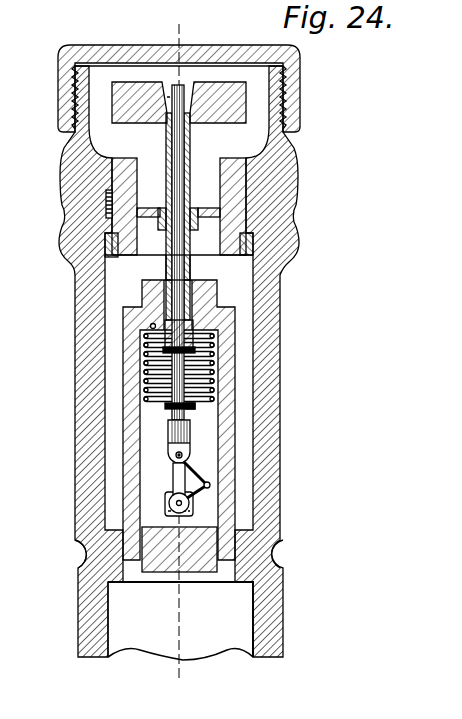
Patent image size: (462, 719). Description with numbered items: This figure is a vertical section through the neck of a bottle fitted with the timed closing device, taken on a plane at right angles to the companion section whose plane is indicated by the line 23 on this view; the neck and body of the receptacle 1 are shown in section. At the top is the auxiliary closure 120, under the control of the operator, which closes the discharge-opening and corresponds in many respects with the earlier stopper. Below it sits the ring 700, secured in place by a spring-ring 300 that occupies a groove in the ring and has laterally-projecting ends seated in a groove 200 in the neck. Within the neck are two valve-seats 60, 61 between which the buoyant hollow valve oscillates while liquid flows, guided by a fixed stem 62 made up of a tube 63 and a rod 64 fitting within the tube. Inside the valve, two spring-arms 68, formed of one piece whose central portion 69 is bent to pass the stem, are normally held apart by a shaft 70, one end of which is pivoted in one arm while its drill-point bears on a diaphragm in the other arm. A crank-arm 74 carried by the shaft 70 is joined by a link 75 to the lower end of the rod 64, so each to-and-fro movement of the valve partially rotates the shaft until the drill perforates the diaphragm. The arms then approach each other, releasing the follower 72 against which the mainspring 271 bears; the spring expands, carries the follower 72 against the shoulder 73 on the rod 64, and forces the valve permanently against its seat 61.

The valve body 1 is at (283, 297).
The section line 23 is at (172, 353).
The valve-seat 60 is at (270, 557).
The valve-seat 61 is at (240, 247).
The fixed stem 62 is at (166, 265).
The tube 63 is at (191, 133).
The rod 64 is at (185, 180).
The spring-arms 68 is at (179, 549).
The central portion 69 is at (152, 324).
The shaft 70 is at (193, 508).
The follower 72 is at (166, 407).
The shoulder 73 is at (188, 418).
The crank-arm 74 is at (181, 503).
The link 75 is at (198, 475).
The auxiliary closure 120 is at (60, 110).
The groove 200 is at (110, 207).
The mainspring 271 is at (128, 368).
The spring-ring 300 is at (107, 198).
The ring 700 is at (112, 168).